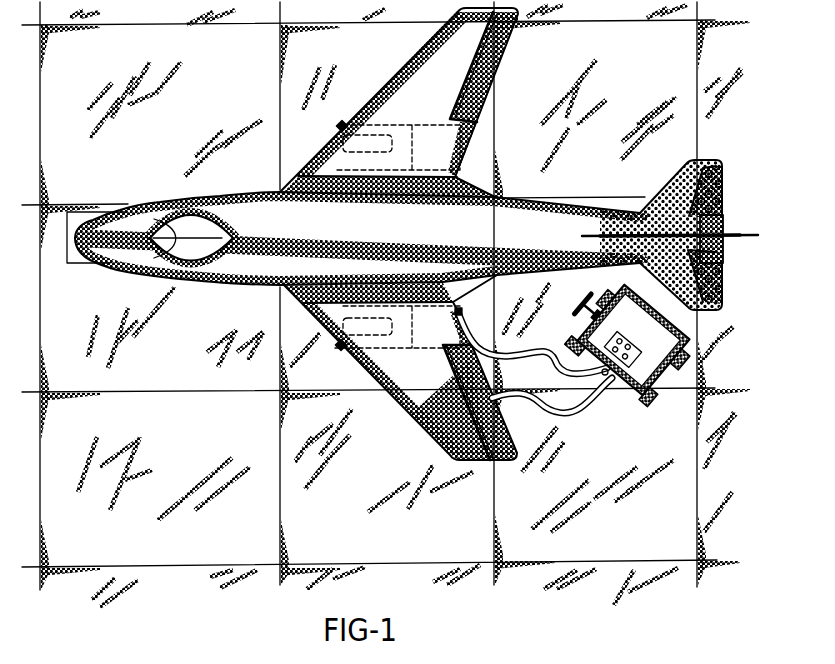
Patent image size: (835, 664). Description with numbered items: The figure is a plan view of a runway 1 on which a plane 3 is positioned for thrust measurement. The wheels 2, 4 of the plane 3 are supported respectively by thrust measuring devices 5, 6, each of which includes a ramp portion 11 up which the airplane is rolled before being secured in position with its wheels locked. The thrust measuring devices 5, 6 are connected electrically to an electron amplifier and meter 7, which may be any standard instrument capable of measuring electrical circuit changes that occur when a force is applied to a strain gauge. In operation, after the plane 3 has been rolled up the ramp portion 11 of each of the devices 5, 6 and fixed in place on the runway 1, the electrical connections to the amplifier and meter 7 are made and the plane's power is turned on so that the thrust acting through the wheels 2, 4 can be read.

The runway 1 is at (260, 32).
The wheel 2 is at (383, 148).
The plane 3 is at (154, 204).
The wheel 4 is at (316, 332).
The thrust measuring device 5 is at (348, 124).
The thrust measuring device 6 is at (341, 350).
The electron amplifier and meter 7 is at (688, 326).
The ramp portion 11 is at (480, 152).